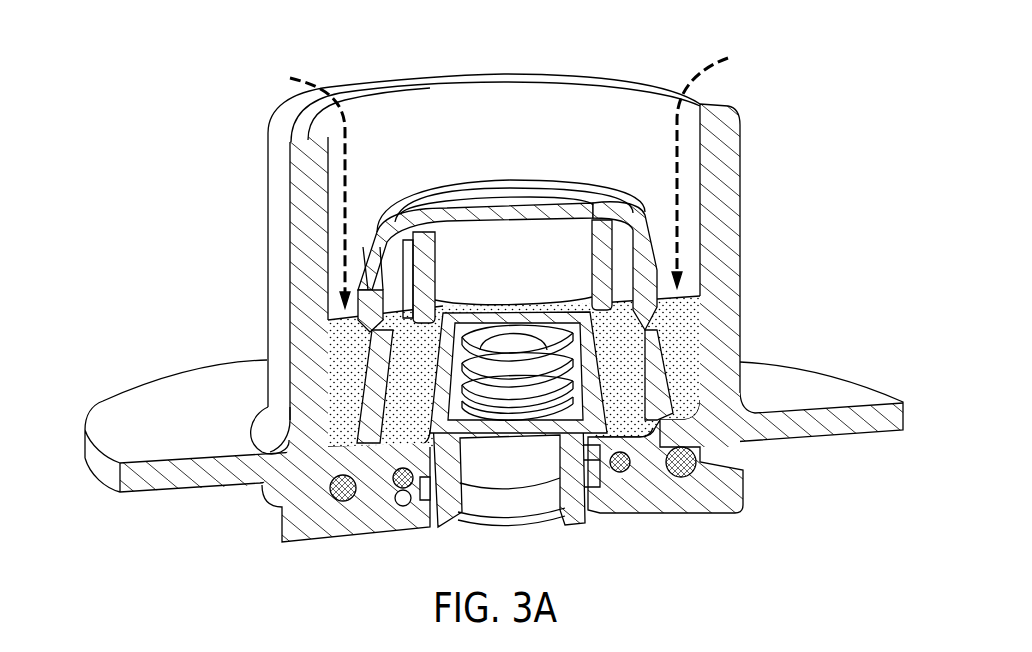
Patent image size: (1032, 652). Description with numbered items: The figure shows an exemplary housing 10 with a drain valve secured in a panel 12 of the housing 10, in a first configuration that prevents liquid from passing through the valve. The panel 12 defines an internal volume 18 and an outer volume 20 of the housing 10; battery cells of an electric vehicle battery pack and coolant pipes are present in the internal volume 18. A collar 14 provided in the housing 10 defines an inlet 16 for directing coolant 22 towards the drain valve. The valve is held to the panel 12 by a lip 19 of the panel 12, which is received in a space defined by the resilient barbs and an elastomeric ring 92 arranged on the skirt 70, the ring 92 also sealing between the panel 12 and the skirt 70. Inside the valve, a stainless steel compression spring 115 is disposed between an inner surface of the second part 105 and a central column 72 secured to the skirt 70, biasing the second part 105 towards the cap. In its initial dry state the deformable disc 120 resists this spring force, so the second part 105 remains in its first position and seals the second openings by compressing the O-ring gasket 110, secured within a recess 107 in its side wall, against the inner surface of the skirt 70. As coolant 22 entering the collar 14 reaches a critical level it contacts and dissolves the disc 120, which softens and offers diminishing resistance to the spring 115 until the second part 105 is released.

The housing 10 is at (116, 317).
The panel 12 is at (103, 413).
The collar 14 is at (733, 143).
The inlet 16 is at (412, 86).
The internal volume 18 is at (175, 357).
The lip 19 is at (357, 470).
The outer volume 20 is at (172, 542).
The coolant 22 is at (700, 328).
The skirt 70 is at (727, 498).
The central column 72 is at (570, 513).
The elastomeric ring 92 is at (300, 492).
The second part 105 is at (407, 503).
The recess 107 is at (609, 488).
The gasket 110 is at (622, 473).
The compression spring 115 is at (460, 366).
The deformable disc 120 is at (603, 235).